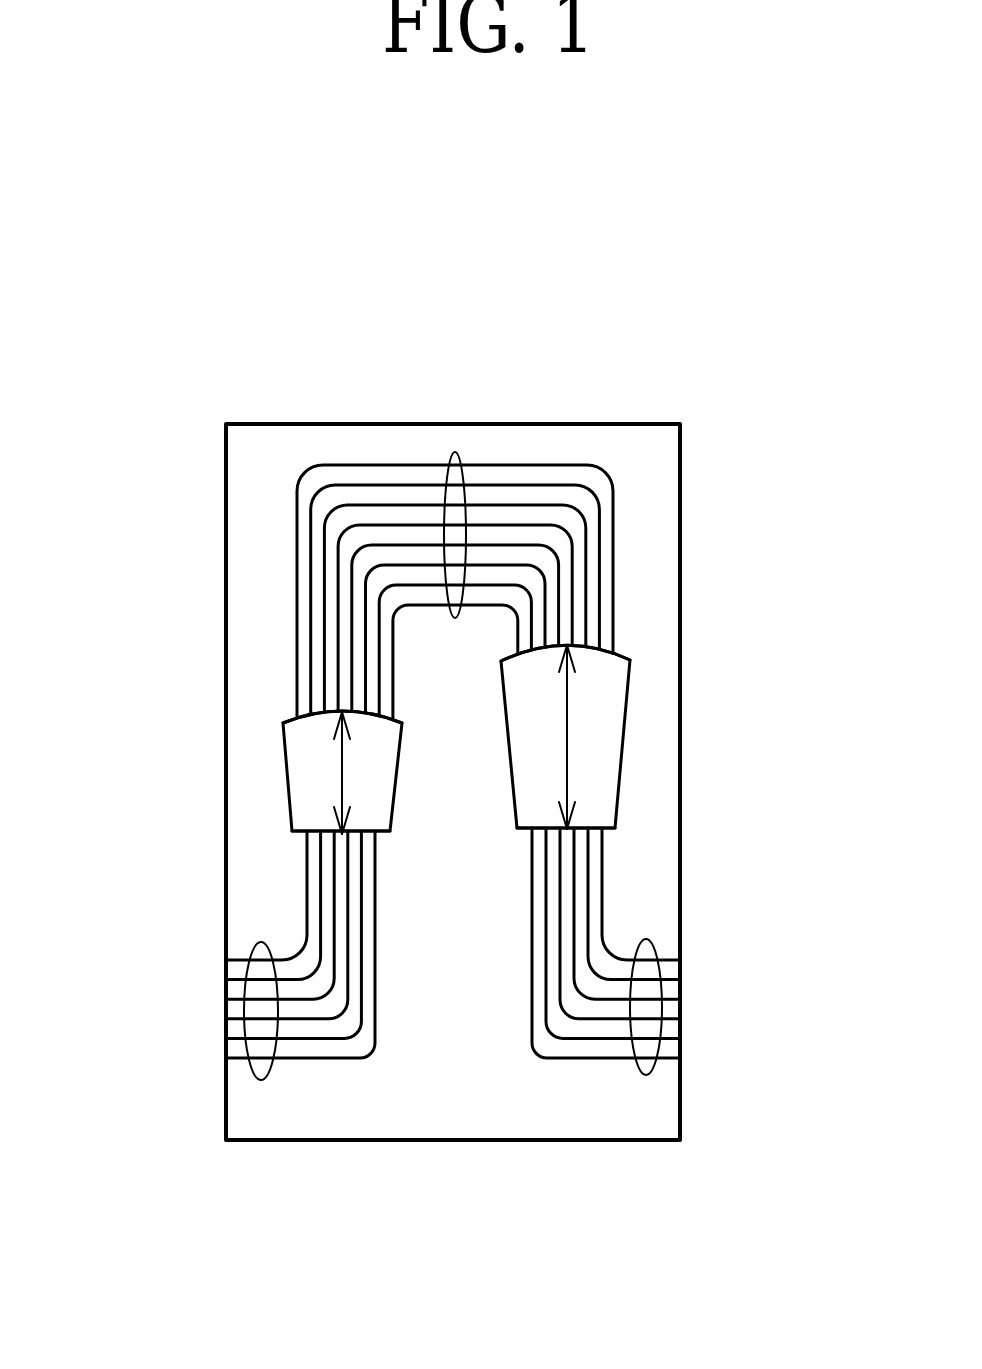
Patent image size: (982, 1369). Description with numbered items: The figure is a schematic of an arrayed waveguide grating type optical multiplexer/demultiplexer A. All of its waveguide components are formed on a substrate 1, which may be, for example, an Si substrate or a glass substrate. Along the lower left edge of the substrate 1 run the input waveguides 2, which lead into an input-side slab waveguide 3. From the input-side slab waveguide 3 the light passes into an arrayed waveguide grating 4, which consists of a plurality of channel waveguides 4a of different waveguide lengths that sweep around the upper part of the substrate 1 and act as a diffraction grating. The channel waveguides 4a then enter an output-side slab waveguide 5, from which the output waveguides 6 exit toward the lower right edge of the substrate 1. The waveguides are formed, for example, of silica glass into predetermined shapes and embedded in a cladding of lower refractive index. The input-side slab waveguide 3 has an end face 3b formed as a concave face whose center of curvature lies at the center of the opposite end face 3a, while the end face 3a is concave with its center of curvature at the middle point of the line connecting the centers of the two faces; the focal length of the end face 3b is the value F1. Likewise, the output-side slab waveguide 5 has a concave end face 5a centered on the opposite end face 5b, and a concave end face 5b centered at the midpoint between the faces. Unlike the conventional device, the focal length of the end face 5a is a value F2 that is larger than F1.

The optical multiplexer/demultiplexer A is at (740, 347).
The substrate 1 is at (295, 1145).
The input waveguides 2 is at (257, 1077).
The input-side slab waveguide 3 is at (310, 778).
The end face of the input-side slab waveguide 3a is at (315, 833).
The end face of the input-side slab waveguide 3b is at (310, 723).
The arrayed waveguide grating 4 is at (455, 499).
The channel waveguides 4a is at (457, 452).
The output-side slab waveguide 5 is at (597, 750).
The end face of the output-side slab waveguide 5a is at (594, 657).
The end face of the output-side slab waveguide 5b is at (597, 827).
The output waveguides 6 is at (657, 1068).
The focal length of the input-side slab waveguide end face F1 is at (342, 787).
The focal length of the output-side slab waveguide end face F2 is at (567, 719).